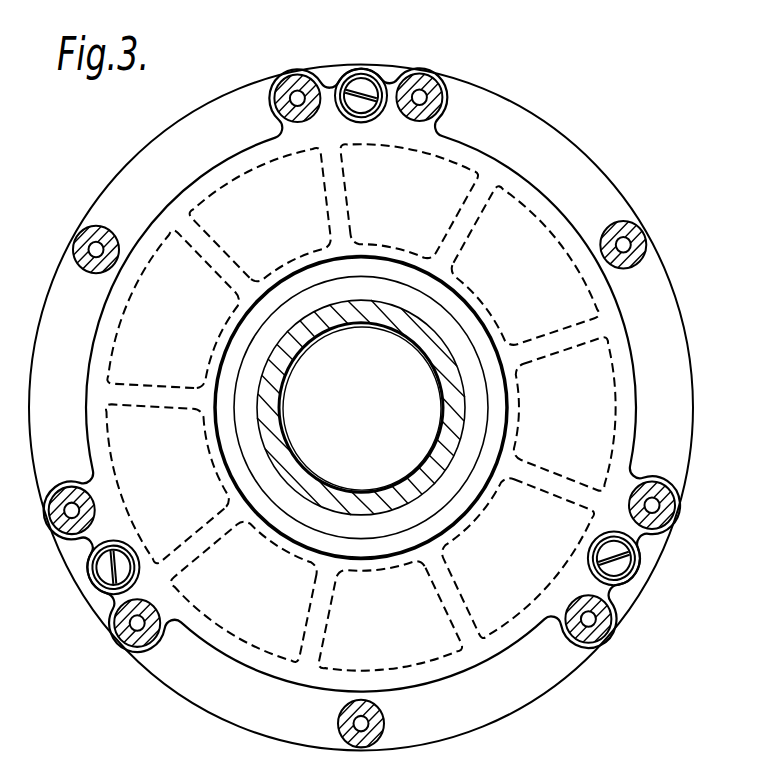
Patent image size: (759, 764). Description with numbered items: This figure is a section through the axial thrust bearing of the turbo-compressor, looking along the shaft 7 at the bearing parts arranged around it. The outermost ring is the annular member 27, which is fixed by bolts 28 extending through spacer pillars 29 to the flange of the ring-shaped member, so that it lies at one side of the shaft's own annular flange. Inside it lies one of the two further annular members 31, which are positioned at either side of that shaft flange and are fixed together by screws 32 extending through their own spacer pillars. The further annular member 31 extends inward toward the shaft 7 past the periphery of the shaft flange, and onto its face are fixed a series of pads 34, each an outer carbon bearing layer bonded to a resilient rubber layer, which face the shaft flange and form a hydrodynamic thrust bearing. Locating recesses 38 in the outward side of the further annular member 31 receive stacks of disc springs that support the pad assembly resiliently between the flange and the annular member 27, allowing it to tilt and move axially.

The shaft 7 is at (413, 338).
The annular member 27 is at (504, 112).
The bolts 28 is at (297, 87).
The spacer pillars 29 is at (271, 96).
The further annular member 31 is at (497, 186).
The screws 32 is at (357, 88).
The pads 34 is at (180, 192).
The locating recesses 38 is at (373, 75).